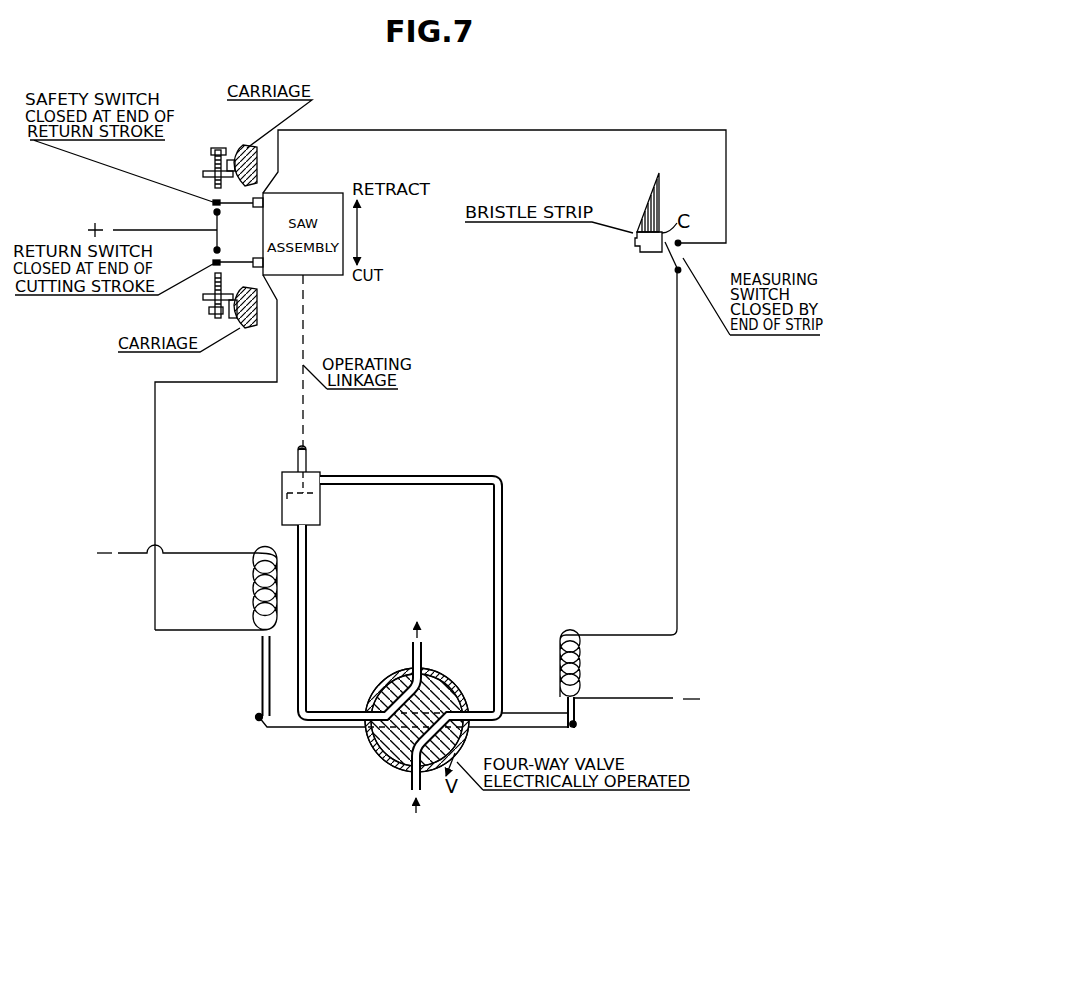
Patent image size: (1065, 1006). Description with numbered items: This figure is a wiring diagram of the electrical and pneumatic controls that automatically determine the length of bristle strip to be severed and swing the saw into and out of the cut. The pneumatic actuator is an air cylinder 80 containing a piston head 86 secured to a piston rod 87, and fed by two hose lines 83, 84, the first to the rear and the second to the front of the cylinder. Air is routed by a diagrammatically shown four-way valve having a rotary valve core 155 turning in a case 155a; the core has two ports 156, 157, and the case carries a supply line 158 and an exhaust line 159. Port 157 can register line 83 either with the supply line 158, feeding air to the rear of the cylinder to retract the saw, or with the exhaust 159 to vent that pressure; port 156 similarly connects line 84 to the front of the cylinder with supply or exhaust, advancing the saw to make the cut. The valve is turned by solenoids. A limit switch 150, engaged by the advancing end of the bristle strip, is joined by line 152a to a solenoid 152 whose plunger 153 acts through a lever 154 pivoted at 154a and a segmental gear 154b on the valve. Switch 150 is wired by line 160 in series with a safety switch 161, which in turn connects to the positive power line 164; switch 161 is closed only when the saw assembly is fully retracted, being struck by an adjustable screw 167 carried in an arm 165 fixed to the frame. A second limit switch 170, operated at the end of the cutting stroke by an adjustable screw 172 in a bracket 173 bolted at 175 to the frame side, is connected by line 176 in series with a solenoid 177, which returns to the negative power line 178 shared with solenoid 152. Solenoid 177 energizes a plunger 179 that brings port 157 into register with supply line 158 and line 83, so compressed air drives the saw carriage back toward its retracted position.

The line 160 is at (468, 130).
The safety switch 161 is at (233, 215).
The positive power line 164 is at (153, 228).
The arm 165 is at (205, 173).
The adjustable screw 167 is at (214, 150).
The limit switch 170 is at (245, 262).
The adjustable screw 172 is at (208, 315).
The bracket 173 is at (203, 297).
The bolts 175 is at (231, 318).
The line 176 is at (155, 440).
The solenoid 177 is at (262, 556).
The negative power line 178 is at (130, 553).
The plunger 179 is at (262, 677).
The limit switch 150 is at (668, 258).
The line 152a is at (677, 460).
The solenoid 152 is at (579, 648).
The plunger 153 is at (577, 707).
The lever 154 is at (528, 713).
The pivot 154a is at (453, 698).
The segmental gear 154b is at (433, 690).
The rotary valve core 155 is at (398, 750).
The valve case 155a is at (374, 744).
The port 156 is at (452, 740).
The port 157 is at (378, 688).
The supply line 158 is at (411, 788).
The exhaust line 159 is at (421, 644).
The air cylinder 80 is at (324, 514).
The hose line 83 is at (307, 587).
The hose line 84 is at (504, 585).
The piston head 86 is at (283, 496).
The piston rod 87 is at (297, 460).